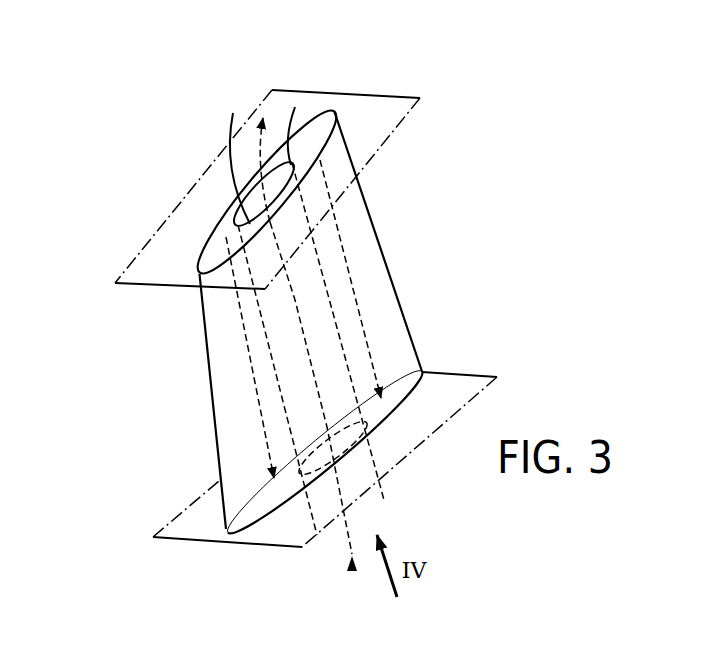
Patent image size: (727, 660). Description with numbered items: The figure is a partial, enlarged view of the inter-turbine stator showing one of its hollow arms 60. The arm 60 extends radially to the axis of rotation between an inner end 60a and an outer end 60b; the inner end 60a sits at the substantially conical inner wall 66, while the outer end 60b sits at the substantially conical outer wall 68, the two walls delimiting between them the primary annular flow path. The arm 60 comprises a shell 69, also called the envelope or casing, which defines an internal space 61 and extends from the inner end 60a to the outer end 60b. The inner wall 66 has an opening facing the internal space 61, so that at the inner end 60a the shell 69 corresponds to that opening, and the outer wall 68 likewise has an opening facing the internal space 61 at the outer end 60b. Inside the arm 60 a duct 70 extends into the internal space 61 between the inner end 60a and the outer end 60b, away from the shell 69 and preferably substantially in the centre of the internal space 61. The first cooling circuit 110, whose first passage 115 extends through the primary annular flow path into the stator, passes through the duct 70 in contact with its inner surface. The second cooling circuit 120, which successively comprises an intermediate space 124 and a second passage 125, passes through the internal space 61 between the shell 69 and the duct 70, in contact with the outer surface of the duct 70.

The arm 60 is at (123, 417).
The inner end 60a is at (438, 362).
The outer end 60b is at (334, 97).
The internal space 61 is at (205, 253).
The inner wall 66 is at (182, 543).
The outer wall 68 is at (388, 108).
The shell 69 is at (368, 207).
The duct 70 is at (347, 358).
The first cooling circuit 110 is at (348, 522).
The first passage 115 is at (300, 297).
The second cooling circuit 120 is at (277, 533).
The intermediate space 124 is at (312, 138).
The second passage 125 is at (364, 298).